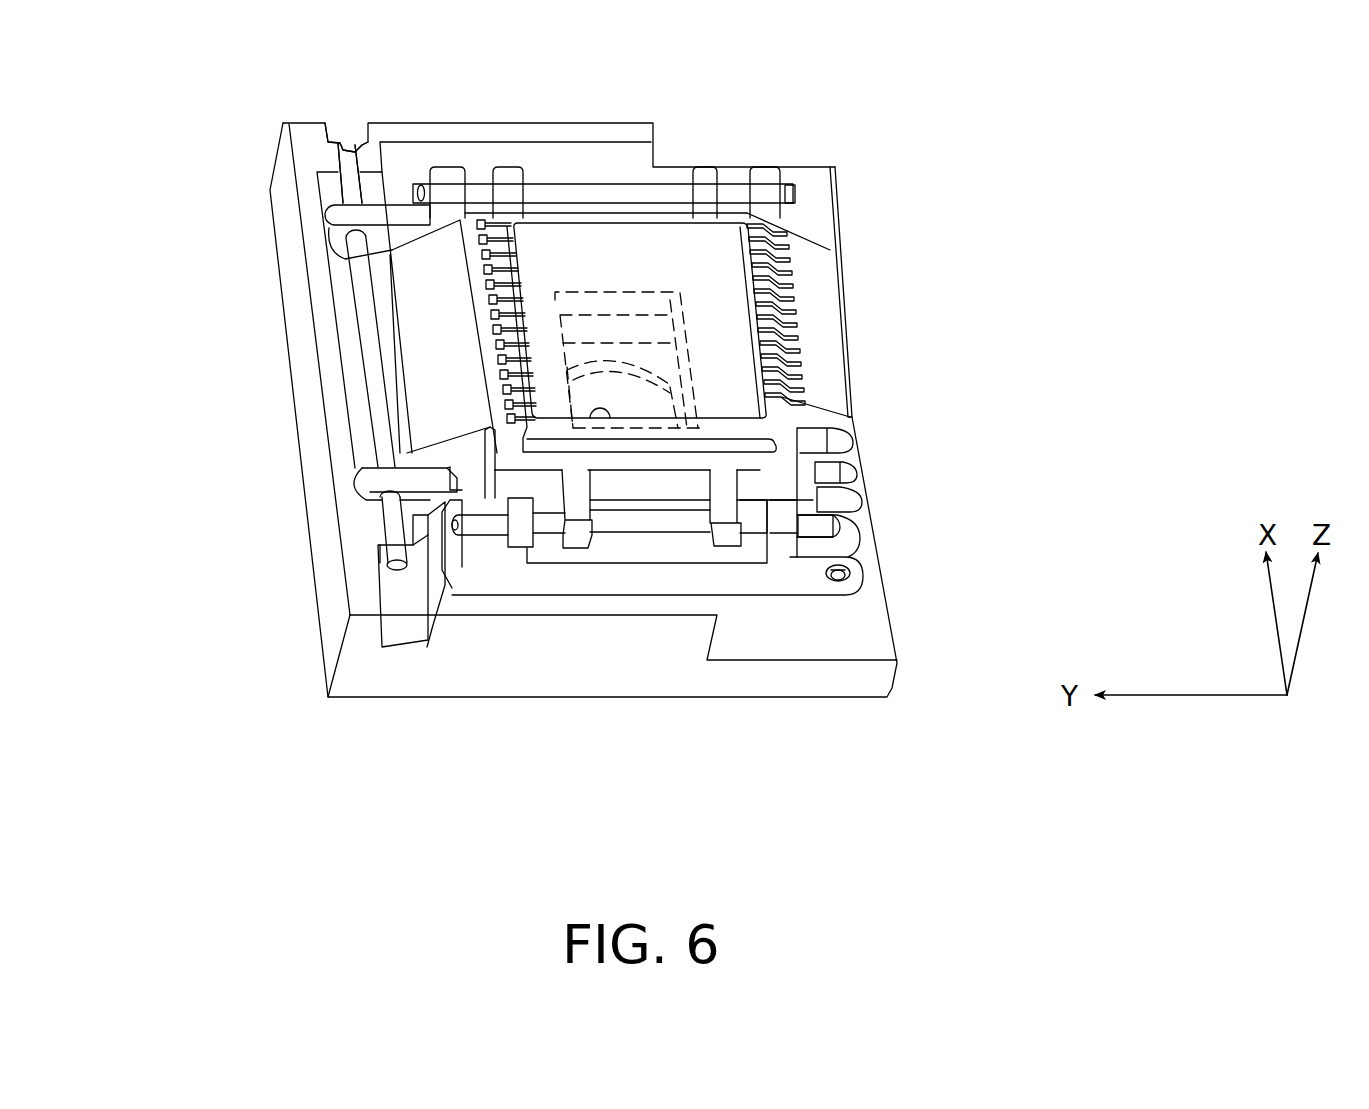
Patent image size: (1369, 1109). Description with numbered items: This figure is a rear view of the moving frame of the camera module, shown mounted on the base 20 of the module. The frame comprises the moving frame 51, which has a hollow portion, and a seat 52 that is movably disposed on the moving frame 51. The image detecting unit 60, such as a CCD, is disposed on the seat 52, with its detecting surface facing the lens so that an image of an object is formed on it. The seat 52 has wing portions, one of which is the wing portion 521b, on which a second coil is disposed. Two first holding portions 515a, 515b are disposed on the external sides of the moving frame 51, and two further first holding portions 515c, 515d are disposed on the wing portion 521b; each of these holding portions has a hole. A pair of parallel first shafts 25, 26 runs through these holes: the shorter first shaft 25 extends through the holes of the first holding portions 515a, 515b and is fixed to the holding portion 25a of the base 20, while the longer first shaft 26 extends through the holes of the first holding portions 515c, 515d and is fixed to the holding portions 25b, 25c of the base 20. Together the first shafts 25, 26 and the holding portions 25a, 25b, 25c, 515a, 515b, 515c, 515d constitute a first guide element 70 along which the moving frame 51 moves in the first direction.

The base 20 is at (537, 651).
The first shaft 25 is at (830, 476).
The holding portion 25a is at (855, 500).
The holding portion 25b is at (378, 534).
The holding portion 25c is at (328, 160).
The first shaft 26 is at (368, 348).
The moving frame 51 is at (776, 579).
The seat 52 is at (645, 485).
The image detecting unit 60 is at (675, 293).
The first guide element 70 is at (96, 78).
The first holding portion 515a is at (855, 547).
The first holding portion 515b is at (838, 443).
The first holding portion 515c is at (377, 478).
The first holding portion 515d is at (340, 217).
The wing portion 521b is at (843, 323).